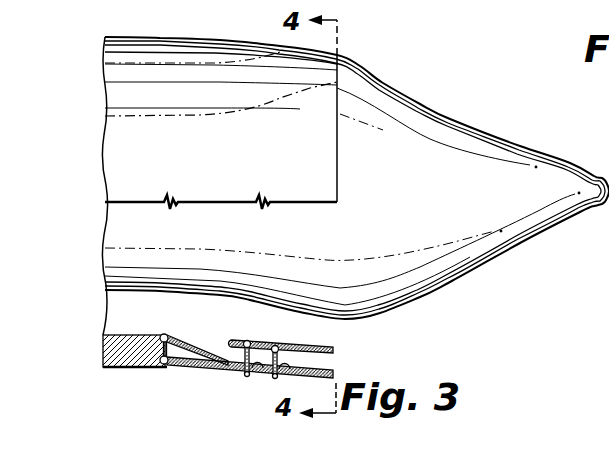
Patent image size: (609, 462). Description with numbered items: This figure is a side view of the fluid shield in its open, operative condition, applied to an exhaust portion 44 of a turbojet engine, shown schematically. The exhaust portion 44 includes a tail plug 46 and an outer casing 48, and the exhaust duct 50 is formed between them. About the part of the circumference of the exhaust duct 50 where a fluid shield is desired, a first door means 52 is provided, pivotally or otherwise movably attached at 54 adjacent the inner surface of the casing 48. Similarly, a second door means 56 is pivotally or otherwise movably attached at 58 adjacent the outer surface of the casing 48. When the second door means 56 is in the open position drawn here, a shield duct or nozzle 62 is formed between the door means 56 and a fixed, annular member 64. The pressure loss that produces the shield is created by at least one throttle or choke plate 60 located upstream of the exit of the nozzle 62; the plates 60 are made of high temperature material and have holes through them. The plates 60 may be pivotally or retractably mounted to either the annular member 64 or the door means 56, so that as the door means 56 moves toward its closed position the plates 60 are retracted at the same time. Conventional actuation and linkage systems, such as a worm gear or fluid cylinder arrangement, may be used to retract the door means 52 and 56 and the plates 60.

The exhaust portion 44 is at (434, 89).
The tail plug 46 is at (342, 188).
The outer casing 48 is at (122, 370).
The exhaust duct 50 is at (120, 309).
The first door means 52 is at (182, 342).
The pivotal attachment 54 is at (163, 334).
The second door means 56 is at (195, 376).
The pivotal attachment 58 is at (165, 370).
The throttle or choke plate 60 is at (252, 378).
The shield duct or nozzle 62 is at (314, 361).
The annular member 64 is at (288, 352).